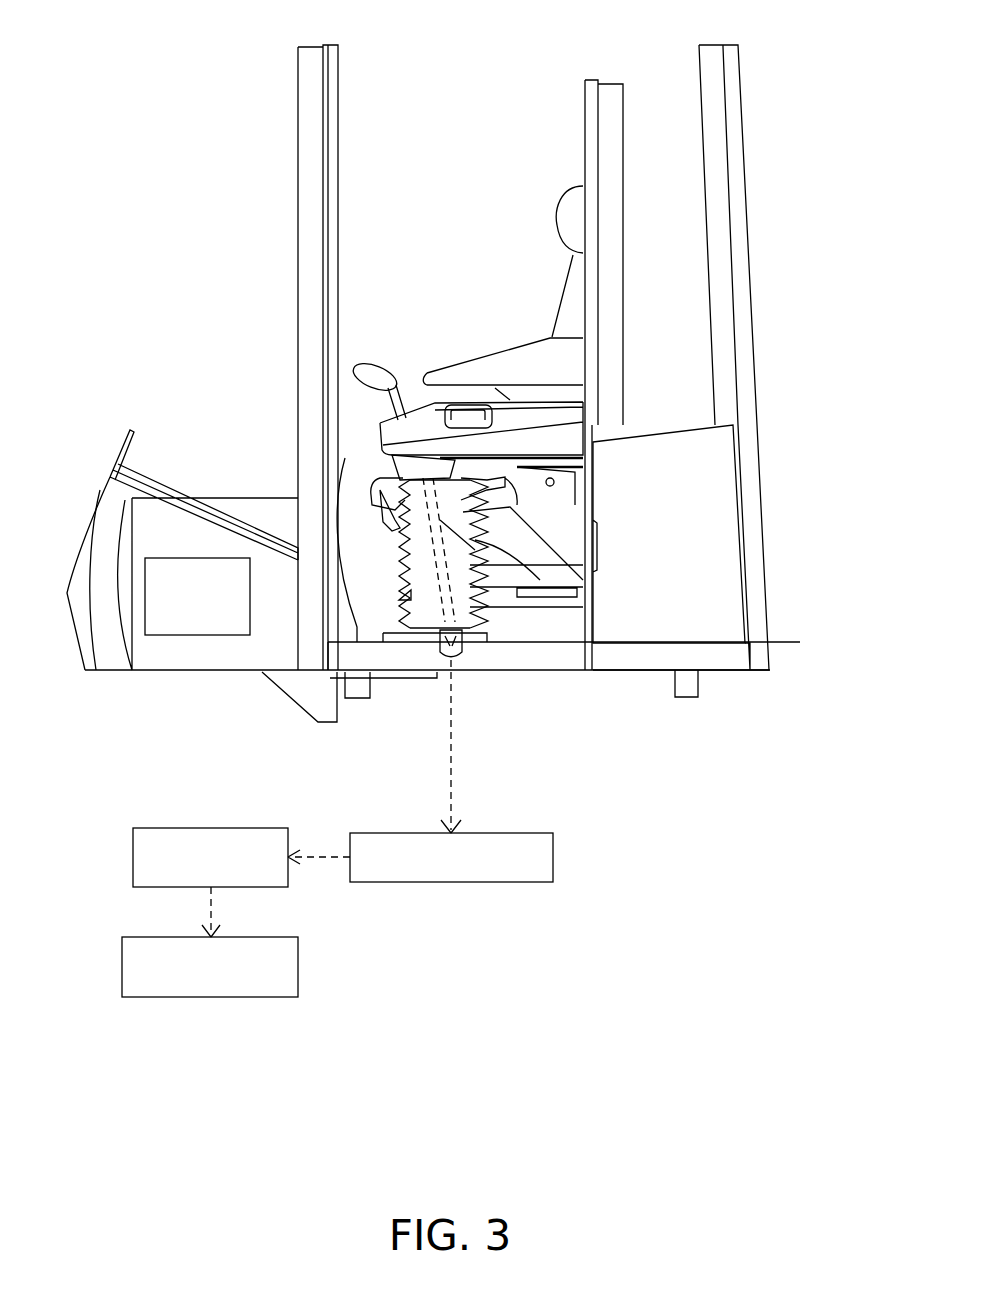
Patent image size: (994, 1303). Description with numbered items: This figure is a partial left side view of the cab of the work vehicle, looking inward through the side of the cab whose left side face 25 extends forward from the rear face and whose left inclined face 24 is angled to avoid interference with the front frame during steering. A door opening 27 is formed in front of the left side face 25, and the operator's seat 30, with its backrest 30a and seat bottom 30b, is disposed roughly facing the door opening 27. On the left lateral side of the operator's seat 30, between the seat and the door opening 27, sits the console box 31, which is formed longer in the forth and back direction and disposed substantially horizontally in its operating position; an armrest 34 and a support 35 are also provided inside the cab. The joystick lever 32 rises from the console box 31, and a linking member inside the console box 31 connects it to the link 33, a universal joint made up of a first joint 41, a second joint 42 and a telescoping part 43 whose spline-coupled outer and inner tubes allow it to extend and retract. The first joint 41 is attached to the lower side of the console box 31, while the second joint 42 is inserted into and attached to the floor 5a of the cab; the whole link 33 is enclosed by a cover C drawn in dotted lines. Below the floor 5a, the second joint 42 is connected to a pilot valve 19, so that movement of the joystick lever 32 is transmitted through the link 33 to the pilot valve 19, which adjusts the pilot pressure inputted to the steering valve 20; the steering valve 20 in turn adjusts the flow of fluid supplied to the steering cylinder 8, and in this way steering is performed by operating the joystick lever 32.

The door opening 27 is at (372, 197).
The left side face 25 is at (592, 640).
The floor 5a is at (622, 613).
The left inclined face 24 is at (172, 593).
The operator's seat 30 is at (503, 214).
The backrest 30a is at (563, 322).
The seat bottom 30b is at (370, 483).
The armrest 34 is at (485, 373).
The console box 31 is at (402, 412).
The first joint 41 is at (428, 470).
The joystick lever 32 is at (355, 373).
The telescoping part 43 is at (410, 537).
The cover C is at (523, 680).
The second joint 42 is at (460, 655).
The link 33 is at (408, 580).
The support 35 is at (583, 535).
The pilot valve 19 is at (451, 771).
The steering valve 20 is at (241, 857).
The steering cylinder 8 is at (210, 942).